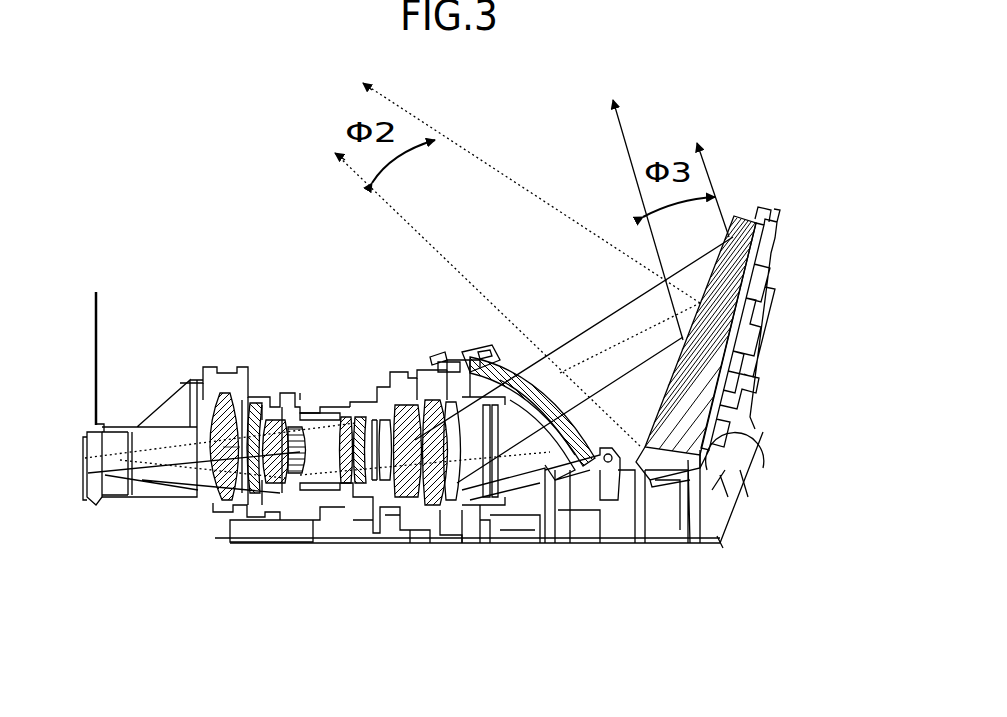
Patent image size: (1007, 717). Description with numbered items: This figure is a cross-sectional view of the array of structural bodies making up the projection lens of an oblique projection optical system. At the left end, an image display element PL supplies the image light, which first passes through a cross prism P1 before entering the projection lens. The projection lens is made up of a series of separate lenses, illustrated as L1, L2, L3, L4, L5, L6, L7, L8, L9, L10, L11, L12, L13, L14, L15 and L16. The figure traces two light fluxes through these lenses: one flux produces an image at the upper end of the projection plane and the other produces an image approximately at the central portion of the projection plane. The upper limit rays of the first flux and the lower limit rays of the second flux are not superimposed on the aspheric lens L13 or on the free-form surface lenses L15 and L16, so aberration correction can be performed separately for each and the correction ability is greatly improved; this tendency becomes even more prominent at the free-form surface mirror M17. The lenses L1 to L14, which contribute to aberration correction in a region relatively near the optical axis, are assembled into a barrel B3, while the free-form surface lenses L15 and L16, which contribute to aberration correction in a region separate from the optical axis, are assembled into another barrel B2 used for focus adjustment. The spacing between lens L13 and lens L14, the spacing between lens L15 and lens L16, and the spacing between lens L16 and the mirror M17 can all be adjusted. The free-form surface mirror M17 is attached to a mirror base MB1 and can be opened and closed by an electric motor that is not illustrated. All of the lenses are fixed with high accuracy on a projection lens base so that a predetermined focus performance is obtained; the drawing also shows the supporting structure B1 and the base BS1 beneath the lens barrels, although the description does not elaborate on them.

The image display element PL is at (90, 495).
The cross prism P1 is at (152, 478).
The lens L1 is at (200, 493).
The lens L2 is at (217, 367).
The lens L3 is at (235, 510).
The lens L4 is at (263, 410).
The lens L5 is at (288, 507).
The lens L6 is at (297, 392).
The lens L7 is at (338, 515).
The lens L8 is at (373, 500).
The lens L9 is at (361, 392).
The lens L10 is at (393, 512).
The lens L11 is at (407, 392).
The lens L12 is at (420, 515).
The aspheric lens L13 is at (445, 520).
The lens L14 is at (433, 387).
The free-form surface lens L15 is at (458, 392).
The free-form surface lens L16 is at (506, 390).
The barrel B3 is at (326, 398).
The barrel B2 is at (468, 503).
The support arm B1 is at (568, 473).
The base BS1 is at (713, 538).
The free-form surface mirror M17 is at (730, 237).
The mirror base MB1 is at (747, 342).